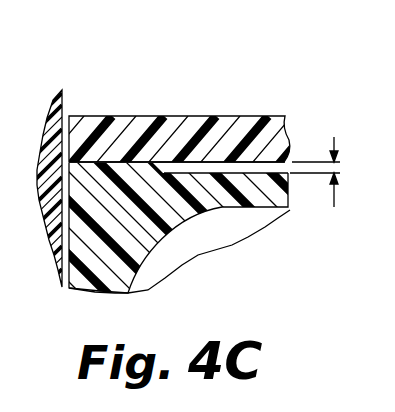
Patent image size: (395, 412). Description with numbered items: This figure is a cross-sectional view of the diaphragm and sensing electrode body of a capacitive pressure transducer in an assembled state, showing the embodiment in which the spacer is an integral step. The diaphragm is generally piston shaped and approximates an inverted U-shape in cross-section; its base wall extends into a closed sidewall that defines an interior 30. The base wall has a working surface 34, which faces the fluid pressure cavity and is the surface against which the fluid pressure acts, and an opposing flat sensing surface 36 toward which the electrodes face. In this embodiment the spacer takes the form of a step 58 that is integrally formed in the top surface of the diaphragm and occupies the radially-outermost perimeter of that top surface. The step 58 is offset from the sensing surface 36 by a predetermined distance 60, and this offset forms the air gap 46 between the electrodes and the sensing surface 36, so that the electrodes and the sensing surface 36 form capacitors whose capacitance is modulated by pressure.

The interior 30 is at (173, 262).
The working surface 34 is at (247, 208).
The sensing surface 36 is at (215, 170).
The air gap 46 is at (262, 167).
The step 58 is at (117, 158).
The predetermined distance 60 is at (317, 186).